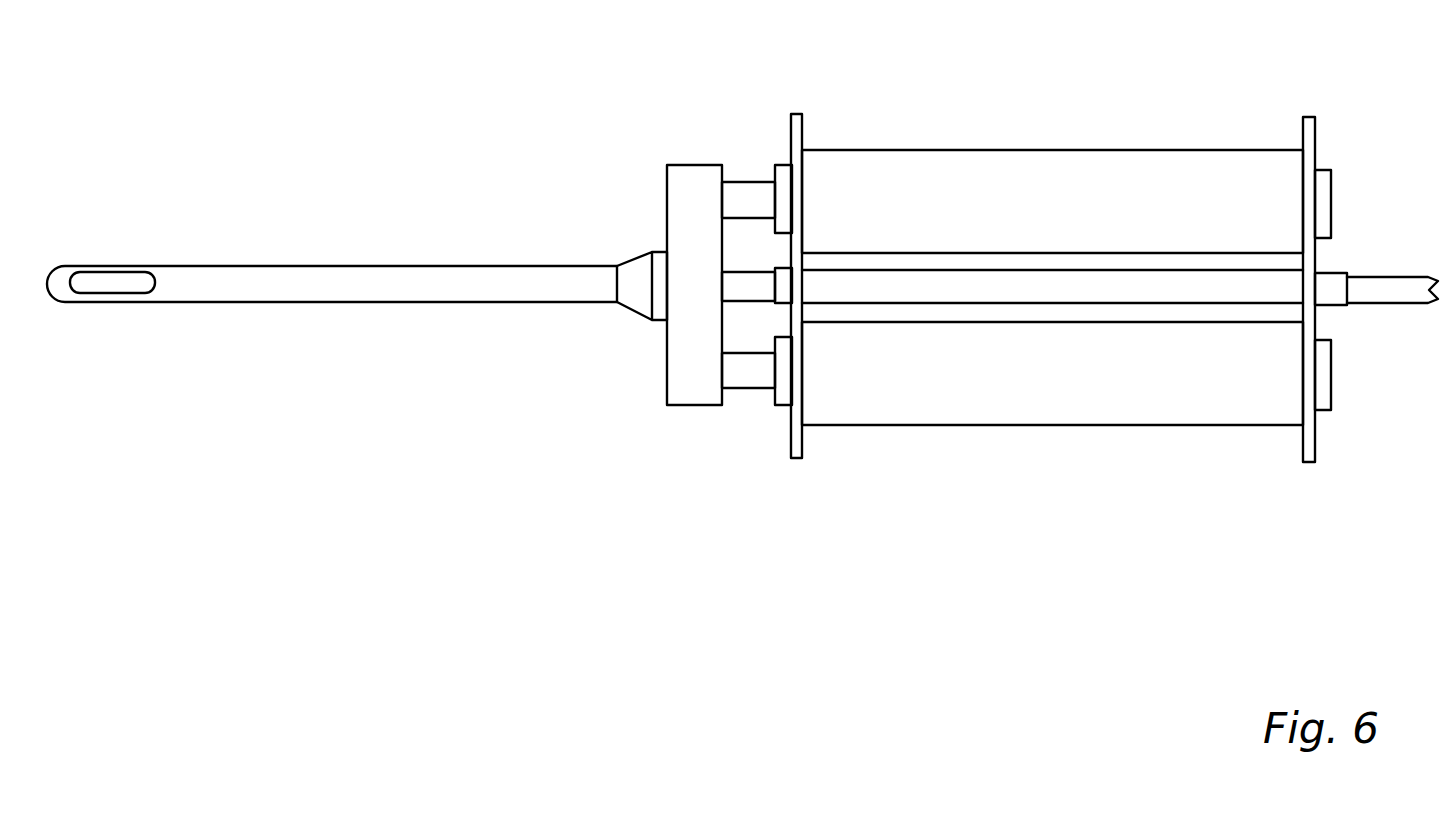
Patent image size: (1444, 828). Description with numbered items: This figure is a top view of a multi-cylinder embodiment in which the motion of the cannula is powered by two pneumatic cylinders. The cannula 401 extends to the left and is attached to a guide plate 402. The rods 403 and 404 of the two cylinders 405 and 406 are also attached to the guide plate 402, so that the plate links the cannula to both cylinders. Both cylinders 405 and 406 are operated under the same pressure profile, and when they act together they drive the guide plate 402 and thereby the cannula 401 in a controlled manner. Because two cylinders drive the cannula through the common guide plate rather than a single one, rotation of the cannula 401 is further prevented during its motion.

The cannula 401 is at (265, 267).
The guide plate 402 is at (685, 405).
The rod 403 is at (743, 183).
The rod 404 is at (748, 390).
The cylinder 405 is at (1058, 150).
The cylinder 406 is at (1025, 425).